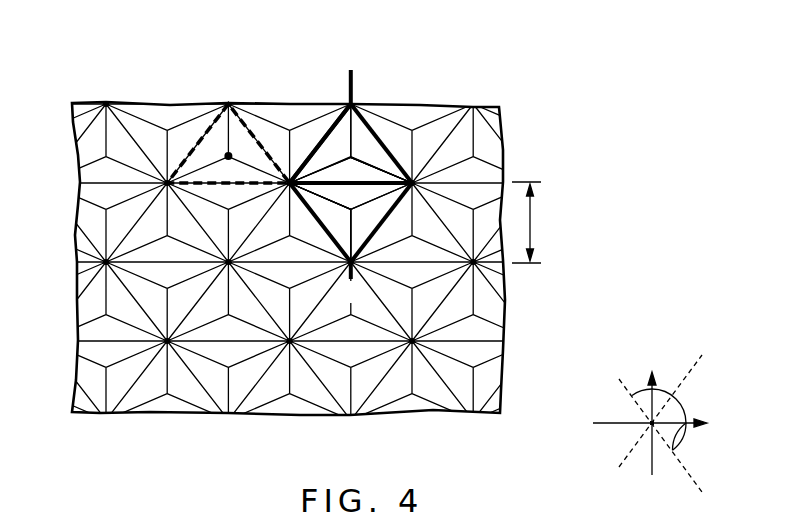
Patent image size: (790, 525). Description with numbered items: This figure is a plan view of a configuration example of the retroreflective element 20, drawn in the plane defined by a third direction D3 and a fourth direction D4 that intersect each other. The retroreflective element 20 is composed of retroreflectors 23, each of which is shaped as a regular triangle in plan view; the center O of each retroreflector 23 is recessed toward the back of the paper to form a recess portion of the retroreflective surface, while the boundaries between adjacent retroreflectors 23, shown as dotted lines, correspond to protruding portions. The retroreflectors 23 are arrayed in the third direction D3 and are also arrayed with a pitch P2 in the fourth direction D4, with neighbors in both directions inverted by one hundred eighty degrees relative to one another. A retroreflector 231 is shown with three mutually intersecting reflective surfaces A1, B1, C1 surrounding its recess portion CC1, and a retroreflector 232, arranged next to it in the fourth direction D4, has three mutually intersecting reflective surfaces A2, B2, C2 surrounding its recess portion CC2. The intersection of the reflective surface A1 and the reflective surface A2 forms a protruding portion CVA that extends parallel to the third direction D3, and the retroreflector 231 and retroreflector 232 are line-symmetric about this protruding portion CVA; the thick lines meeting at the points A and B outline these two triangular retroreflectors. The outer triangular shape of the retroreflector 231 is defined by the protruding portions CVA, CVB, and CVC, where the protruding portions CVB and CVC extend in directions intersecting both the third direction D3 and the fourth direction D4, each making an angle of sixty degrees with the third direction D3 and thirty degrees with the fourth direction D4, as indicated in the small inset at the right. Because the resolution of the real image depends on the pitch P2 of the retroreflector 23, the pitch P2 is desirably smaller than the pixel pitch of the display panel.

The retroreflective element 20 is at (505, 93).
The retroreflector 23 is at (228, 122).
The retroreflector 231 is at (320, 96).
The retroreflector 232 is at (381, 317).
The vertex A is at (349, 76).
The vertex B is at (350, 283).
The center O is at (205, 113).
The reflective surface A1 is at (391, 101).
The reflective surface B1 is at (351, 92).
The reflective surface C1 is at (404, 112).
The reflective surface A2 is at (283, 317).
The reflective surface B2 is at (302, 317).
The reflective surface C2 is at (331, 330).
The recess portion CC1 is at (328, 107).
The recess portion CC2 is at (427, 245).
The protruding portion CVA is at (434, 205).
The protruding portion CVB is at (382, 285).
The protruding portion CVC is at (549, 304).
The pitch P2 is at (537, 222).
The third direction D3 is at (666, 425).
The fourth direction D4 is at (652, 411).